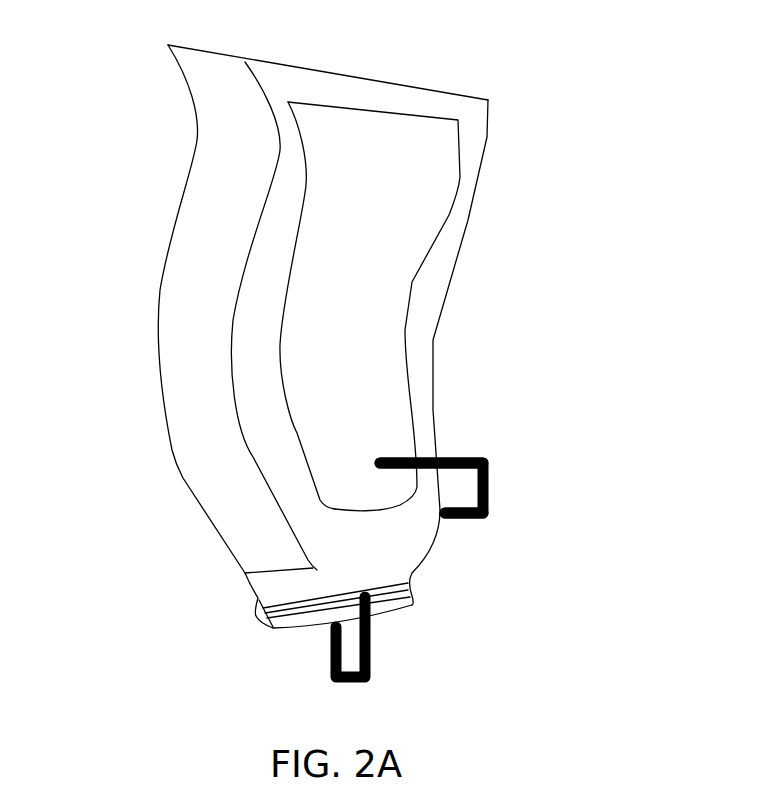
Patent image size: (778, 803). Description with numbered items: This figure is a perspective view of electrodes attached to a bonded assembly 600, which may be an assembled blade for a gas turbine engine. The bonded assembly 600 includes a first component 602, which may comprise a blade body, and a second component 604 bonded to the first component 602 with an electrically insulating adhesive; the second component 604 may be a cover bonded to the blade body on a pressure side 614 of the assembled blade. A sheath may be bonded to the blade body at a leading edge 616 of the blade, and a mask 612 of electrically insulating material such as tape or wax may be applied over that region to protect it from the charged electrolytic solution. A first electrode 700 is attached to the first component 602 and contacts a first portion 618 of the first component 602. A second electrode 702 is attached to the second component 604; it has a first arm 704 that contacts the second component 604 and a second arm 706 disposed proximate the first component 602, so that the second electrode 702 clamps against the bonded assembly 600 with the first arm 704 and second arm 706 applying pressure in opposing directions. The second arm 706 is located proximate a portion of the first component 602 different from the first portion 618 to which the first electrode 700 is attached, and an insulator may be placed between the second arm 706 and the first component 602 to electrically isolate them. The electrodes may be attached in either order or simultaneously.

The bonded assembly 600 is at (351, 329).
The first component 602 is at (278, 98).
The second component 604 is at (398, 318).
The mask 612 is at (222, 268).
The pressure side 614 is at (274, 327).
The leading edge 616 is at (192, 162).
The first portion 618 is at (412, 605).
The first electrode 700 is at (378, 650).
The second electrode 702 is at (478, 491).
The first arm 704 is at (430, 455).
The second arm 706 is at (475, 518).